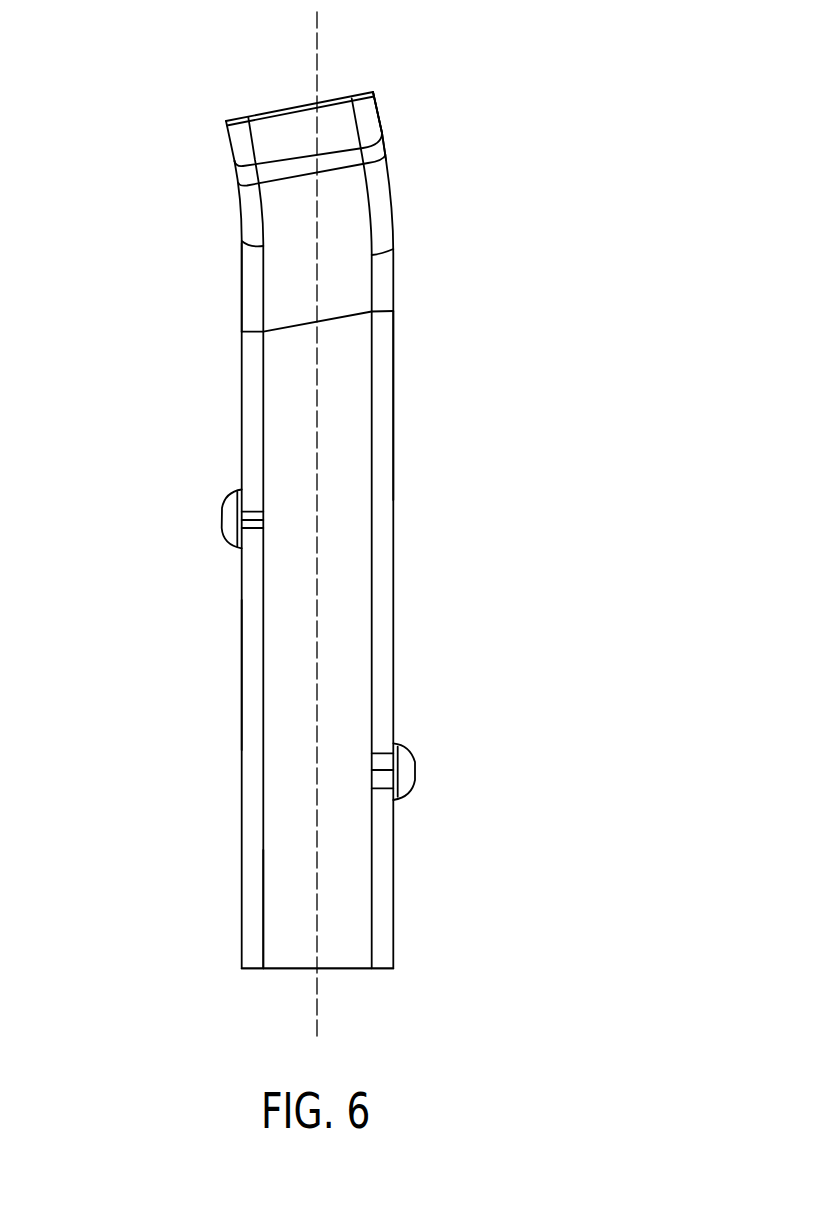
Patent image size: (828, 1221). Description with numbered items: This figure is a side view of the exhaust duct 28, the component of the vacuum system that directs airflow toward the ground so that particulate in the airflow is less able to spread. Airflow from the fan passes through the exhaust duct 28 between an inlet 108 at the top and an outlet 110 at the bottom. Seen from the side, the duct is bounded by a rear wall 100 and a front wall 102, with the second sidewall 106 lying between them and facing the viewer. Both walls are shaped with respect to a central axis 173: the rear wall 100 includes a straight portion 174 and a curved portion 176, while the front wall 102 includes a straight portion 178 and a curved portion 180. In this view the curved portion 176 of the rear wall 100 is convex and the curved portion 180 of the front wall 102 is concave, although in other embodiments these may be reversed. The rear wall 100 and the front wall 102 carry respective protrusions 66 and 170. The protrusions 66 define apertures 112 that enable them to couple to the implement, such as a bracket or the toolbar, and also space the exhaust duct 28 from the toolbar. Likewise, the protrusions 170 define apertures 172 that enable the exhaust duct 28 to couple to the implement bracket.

The exhaust duct 28 is at (545, 203).
The rear wall 100 is at (393, 532).
The front wall 102 is at (241, 693).
The second sidewall 106 is at (283, 868).
The inlet 108 is at (290, 110).
The outlet 110 is at (298, 963).
The apertures 112 is at (417, 762).
The protrusions 66 is at (403, 783).
The protrusions 170 is at (225, 541).
The apertures 172 is at (182, 474).
The central axis 173 is at (317, 262).
The straight portion 174 is at (393, 455).
The curved portion 176 is at (388, 158).
The straight portion 178 is at (240, 355).
The curved portion 180 is at (237, 190).